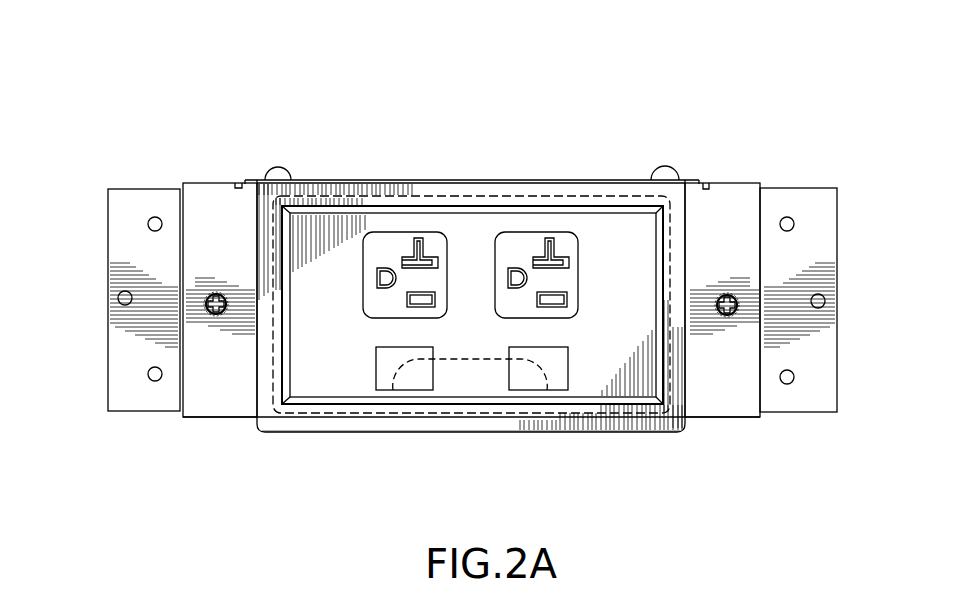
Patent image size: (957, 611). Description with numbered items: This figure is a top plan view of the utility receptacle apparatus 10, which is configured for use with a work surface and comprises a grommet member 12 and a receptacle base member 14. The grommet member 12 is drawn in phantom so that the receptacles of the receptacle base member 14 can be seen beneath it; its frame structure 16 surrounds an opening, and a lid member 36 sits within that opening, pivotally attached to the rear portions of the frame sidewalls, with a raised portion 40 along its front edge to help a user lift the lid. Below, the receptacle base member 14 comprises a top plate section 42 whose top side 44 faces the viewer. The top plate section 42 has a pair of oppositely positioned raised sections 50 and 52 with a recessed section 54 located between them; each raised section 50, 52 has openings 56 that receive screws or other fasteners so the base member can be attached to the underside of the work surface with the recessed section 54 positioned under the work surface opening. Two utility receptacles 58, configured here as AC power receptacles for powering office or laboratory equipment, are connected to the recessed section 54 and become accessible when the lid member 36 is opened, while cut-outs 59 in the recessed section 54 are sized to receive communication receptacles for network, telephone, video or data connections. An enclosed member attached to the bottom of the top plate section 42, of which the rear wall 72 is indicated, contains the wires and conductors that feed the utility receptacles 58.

The utility receptacle apparatus 10 is at (270, 135).
The grommet member 12 is at (292, 432).
The receptacle base member 14 is at (725, 417).
The frame structure 16 is at (645, 433).
The lid member 36 is at (473, 413).
The raised portion 40 is at (457, 359).
The top plate section 42 is at (202, 420).
The top side 44 is at (218, 388).
The raised section 50 is at (138, 390).
The raised section 52 is at (817, 363).
The recessed section 54 is at (322, 372).
The opening 56 is at (150, 373).
The utility receptacle 58 is at (364, 277).
The cut-out 59 is at (376, 358).
The rear wall 72 is at (438, 180).